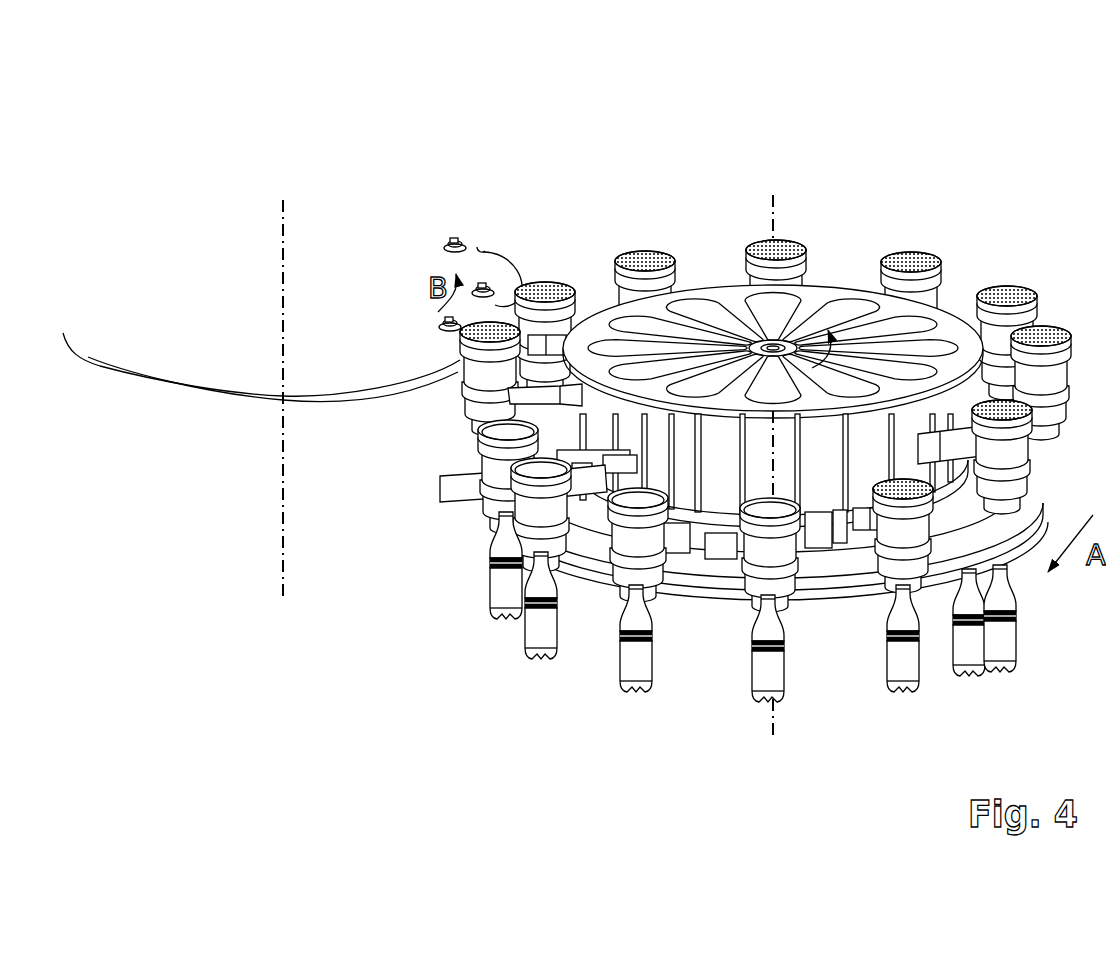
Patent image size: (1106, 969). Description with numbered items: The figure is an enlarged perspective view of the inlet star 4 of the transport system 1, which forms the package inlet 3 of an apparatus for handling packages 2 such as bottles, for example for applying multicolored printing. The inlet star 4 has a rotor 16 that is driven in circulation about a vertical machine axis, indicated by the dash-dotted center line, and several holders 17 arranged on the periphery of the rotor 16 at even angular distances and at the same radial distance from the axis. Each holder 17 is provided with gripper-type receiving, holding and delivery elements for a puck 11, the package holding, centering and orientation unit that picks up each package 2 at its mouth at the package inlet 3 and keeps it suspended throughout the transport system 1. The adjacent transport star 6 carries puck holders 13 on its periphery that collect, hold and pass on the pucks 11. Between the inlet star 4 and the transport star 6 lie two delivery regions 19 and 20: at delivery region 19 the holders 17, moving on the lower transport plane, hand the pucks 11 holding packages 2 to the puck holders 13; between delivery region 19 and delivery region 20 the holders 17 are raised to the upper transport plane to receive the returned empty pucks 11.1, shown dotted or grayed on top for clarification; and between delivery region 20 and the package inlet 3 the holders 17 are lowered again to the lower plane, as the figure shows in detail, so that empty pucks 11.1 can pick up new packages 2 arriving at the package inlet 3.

The transport system 1 is at (1007, 180).
The package 2 is at (627, 655).
The package inlet 3 is at (913, 712).
The inlet star 4 is at (710, 260).
The transport star 6 is at (163, 408).
The puck 11 is at (485, 457).
The empty puck 11.1 is at (1010, 290).
The puck holder 13 is at (488, 258).
The rotor 16 is at (833, 283).
The holder 17 is at (862, 518).
The delivery region 19 is at (445, 398).
The delivery region 20 is at (548, 258).